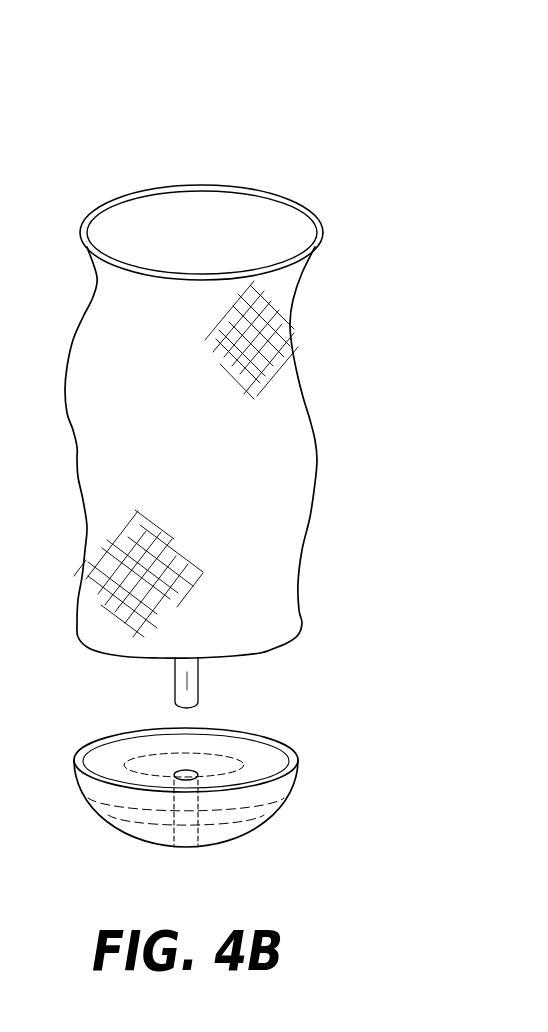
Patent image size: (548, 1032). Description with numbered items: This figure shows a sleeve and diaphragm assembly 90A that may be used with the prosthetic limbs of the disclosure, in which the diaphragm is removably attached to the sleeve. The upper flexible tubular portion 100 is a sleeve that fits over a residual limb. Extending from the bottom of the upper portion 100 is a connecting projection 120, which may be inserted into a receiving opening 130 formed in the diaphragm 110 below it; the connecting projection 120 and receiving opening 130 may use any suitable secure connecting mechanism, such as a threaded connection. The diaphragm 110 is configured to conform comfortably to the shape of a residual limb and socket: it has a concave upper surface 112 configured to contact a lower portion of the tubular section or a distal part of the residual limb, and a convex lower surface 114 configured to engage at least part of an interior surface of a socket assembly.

The sleeve and diaphragm assembly 90A is at (291, 154).
The upper flexible tubular portion 100 is at (323, 435).
The diaphragm 110 is at (285, 798).
The concave upper surface 112 is at (250, 757).
The convex lower surface 114 is at (141, 810).
The connecting projection 120 is at (207, 660).
The receiving opening 130 is at (182, 756).